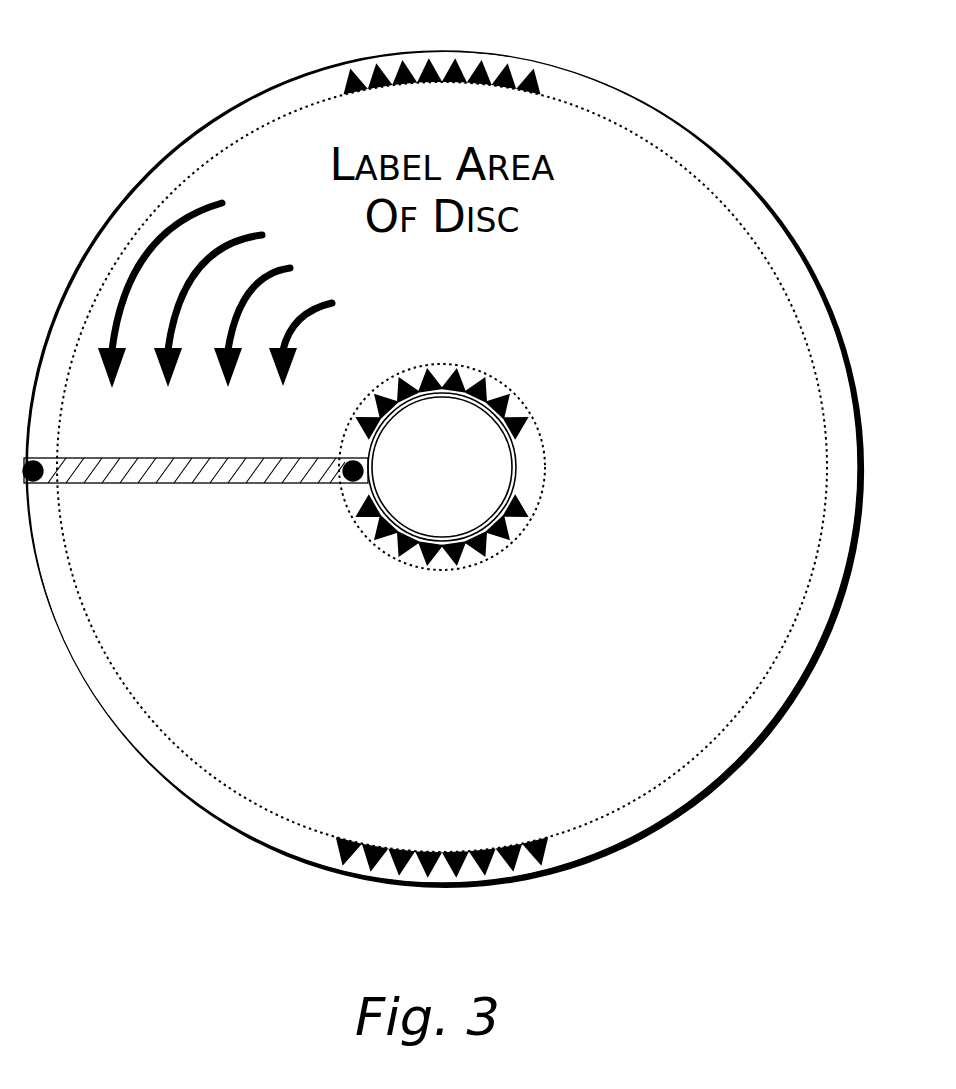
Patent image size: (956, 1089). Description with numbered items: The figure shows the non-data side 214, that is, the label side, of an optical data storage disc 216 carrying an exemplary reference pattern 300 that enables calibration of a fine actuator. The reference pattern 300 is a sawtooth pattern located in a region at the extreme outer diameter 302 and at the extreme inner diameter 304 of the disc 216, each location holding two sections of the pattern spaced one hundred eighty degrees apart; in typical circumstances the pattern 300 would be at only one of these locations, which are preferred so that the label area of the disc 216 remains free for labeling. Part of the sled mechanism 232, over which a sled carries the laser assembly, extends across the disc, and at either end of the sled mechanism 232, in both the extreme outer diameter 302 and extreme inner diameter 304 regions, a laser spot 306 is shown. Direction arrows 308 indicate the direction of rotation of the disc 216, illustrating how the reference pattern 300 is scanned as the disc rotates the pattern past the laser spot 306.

The non-data side 214 is at (693, 333).
The optical data storage disc 216 is at (733, 165).
The sled mechanism 232 is at (160, 458).
The reference pattern 300 is at (480, 64).
The extreme outer diameter 302 is at (636, 122).
The extreme inner diameter 304 is at (530, 478).
The laser spot 306 is at (36, 461).
The direction arrows 308 is at (175, 232).